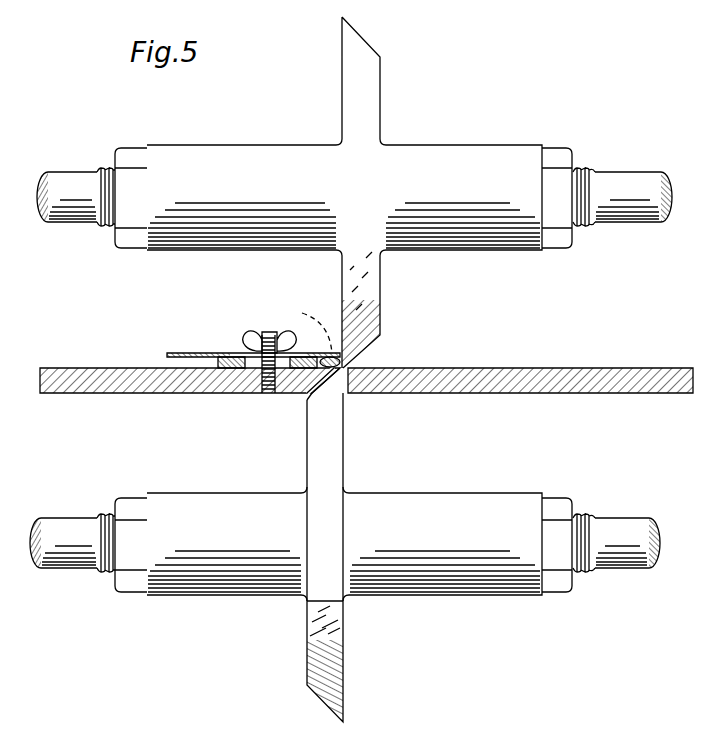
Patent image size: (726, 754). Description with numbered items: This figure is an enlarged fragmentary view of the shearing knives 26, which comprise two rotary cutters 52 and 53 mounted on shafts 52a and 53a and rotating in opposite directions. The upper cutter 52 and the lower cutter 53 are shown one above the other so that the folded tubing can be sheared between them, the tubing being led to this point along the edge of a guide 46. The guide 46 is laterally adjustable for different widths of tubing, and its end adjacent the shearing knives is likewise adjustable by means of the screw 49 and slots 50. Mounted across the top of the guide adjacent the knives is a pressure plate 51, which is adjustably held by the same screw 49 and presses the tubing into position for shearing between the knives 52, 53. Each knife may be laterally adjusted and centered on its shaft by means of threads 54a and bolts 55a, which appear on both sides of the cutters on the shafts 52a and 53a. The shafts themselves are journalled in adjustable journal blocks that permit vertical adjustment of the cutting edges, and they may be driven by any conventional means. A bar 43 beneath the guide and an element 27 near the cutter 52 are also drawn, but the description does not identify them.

The shearing knives 26 is at (382, 68).
The stop 27 is at (307, 326).
The base bar 43 is at (70, 394).
The guide 46 is at (301, 372).
The screw 49 is at (266, 332).
The slots 50 is at (256, 390).
The pressure plate 51 is at (200, 354).
The rotary cutter 52 is at (384, 311).
The shaft 52a is at (620, 181).
The rotary cutter 53 is at (344, 450).
The shaft 53a is at (614, 532).
The threads 54a is at (102, 228).
The bolts 55a is at (135, 234).